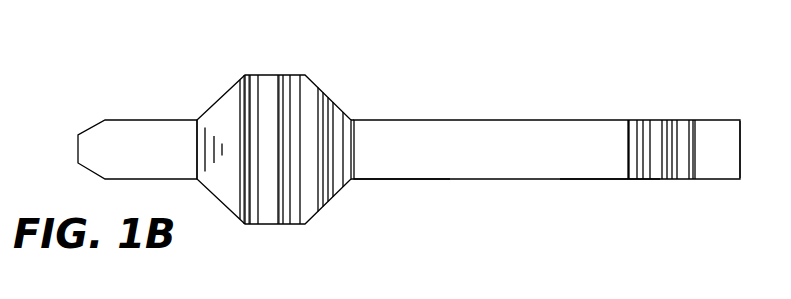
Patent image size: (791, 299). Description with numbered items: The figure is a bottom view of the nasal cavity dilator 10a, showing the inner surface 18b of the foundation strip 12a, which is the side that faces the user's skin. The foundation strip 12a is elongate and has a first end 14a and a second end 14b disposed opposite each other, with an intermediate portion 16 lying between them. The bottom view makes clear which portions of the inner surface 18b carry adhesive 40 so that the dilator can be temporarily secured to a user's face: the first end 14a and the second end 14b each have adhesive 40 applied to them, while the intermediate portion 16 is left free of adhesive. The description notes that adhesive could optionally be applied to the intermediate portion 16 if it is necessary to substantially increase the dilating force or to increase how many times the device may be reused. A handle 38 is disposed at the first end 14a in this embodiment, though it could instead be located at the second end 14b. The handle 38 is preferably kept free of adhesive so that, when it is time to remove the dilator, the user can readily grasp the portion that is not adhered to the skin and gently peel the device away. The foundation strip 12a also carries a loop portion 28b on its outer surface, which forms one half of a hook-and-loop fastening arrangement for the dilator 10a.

The handle 38 is at (100, 120).
The adhesive 40 is at (266, 93).
The first end 14a is at (223, 203).
The intermediate portion 16 is at (480, 132).
The second end 14b is at (742, 150).
The inner surface 18b is at (405, 165).
The foundation strip 12a is at (603, 180).
The nasal cavity dilator 10a is at (503, 195).
The loop portion 28b is at (552, 293).